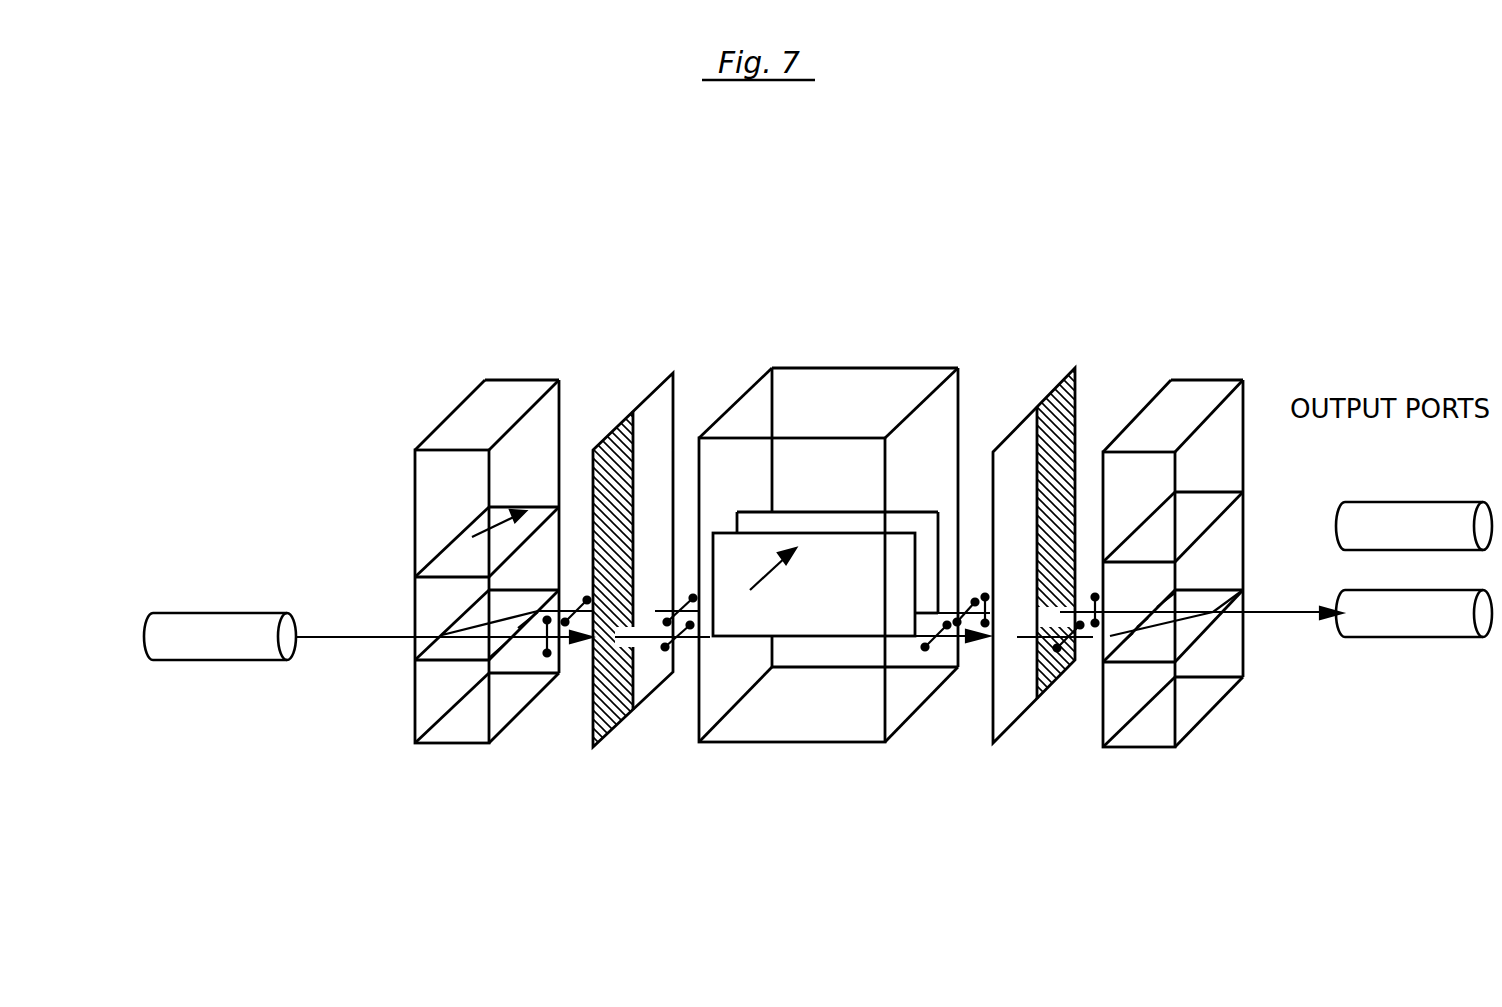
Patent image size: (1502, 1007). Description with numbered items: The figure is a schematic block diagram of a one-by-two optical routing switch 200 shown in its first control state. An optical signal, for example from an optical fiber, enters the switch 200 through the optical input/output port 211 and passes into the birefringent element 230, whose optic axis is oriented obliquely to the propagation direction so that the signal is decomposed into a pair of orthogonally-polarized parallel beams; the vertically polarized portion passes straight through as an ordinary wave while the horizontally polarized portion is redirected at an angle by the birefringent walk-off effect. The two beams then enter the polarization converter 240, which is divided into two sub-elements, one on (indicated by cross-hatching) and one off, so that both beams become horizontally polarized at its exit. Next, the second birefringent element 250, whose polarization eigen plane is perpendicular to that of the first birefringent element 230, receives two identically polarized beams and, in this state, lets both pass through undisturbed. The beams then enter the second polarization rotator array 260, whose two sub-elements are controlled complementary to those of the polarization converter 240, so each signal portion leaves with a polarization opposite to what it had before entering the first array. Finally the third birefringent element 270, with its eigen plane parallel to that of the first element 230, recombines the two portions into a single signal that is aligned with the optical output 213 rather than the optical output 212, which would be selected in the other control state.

The 1×2 optical routing switch 200 is at (1142, 188).
The optical input/output port 211 is at (219, 612).
The optical output 212 is at (1400, 502).
The optical output 213 is at (1407, 637).
The birefringent element 230 is at (520, 380).
The polarization converter 240 is at (653, 390).
The second birefringent element 250 is at (833, 367).
The second polarization rotator array 260 is at (1037, 407).
The third birefringent element 270 is at (1196, 380).